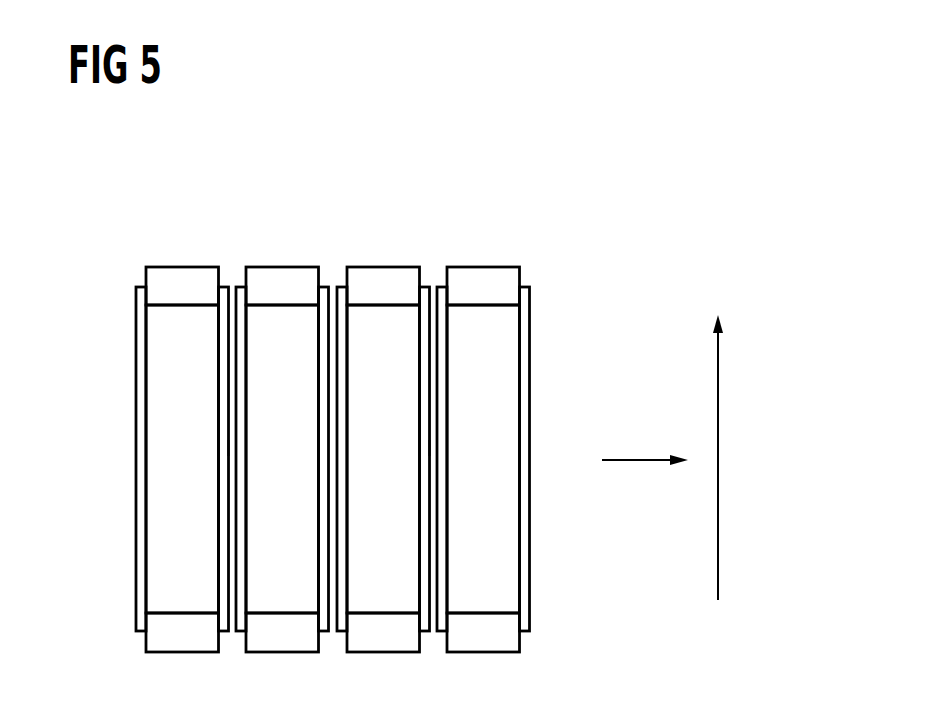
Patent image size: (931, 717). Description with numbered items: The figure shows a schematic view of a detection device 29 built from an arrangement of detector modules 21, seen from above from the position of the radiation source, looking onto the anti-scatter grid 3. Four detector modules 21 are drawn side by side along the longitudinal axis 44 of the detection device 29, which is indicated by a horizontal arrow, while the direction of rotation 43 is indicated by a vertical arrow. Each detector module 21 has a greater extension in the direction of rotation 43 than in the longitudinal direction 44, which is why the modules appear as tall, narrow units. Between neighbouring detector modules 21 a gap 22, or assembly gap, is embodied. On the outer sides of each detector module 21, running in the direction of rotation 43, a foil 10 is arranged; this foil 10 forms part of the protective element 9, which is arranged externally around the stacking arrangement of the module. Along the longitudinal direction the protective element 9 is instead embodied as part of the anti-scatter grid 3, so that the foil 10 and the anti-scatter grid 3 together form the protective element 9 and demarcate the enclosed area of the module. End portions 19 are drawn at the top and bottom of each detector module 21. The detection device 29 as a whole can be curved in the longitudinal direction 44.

The anti-scatter grid 3 is at (265, 544).
The protective element 9 is at (331, 461).
The foil 10 is at (238, 290).
The end plate / frame 19 is at (163, 282).
The detector module 21 is at (177, 228).
The gap 22 is at (233, 448).
The detection device 29 is at (530, 144).
The rotational axis 43 is at (719, 450).
The longitudinal axis 44 is at (633, 465).